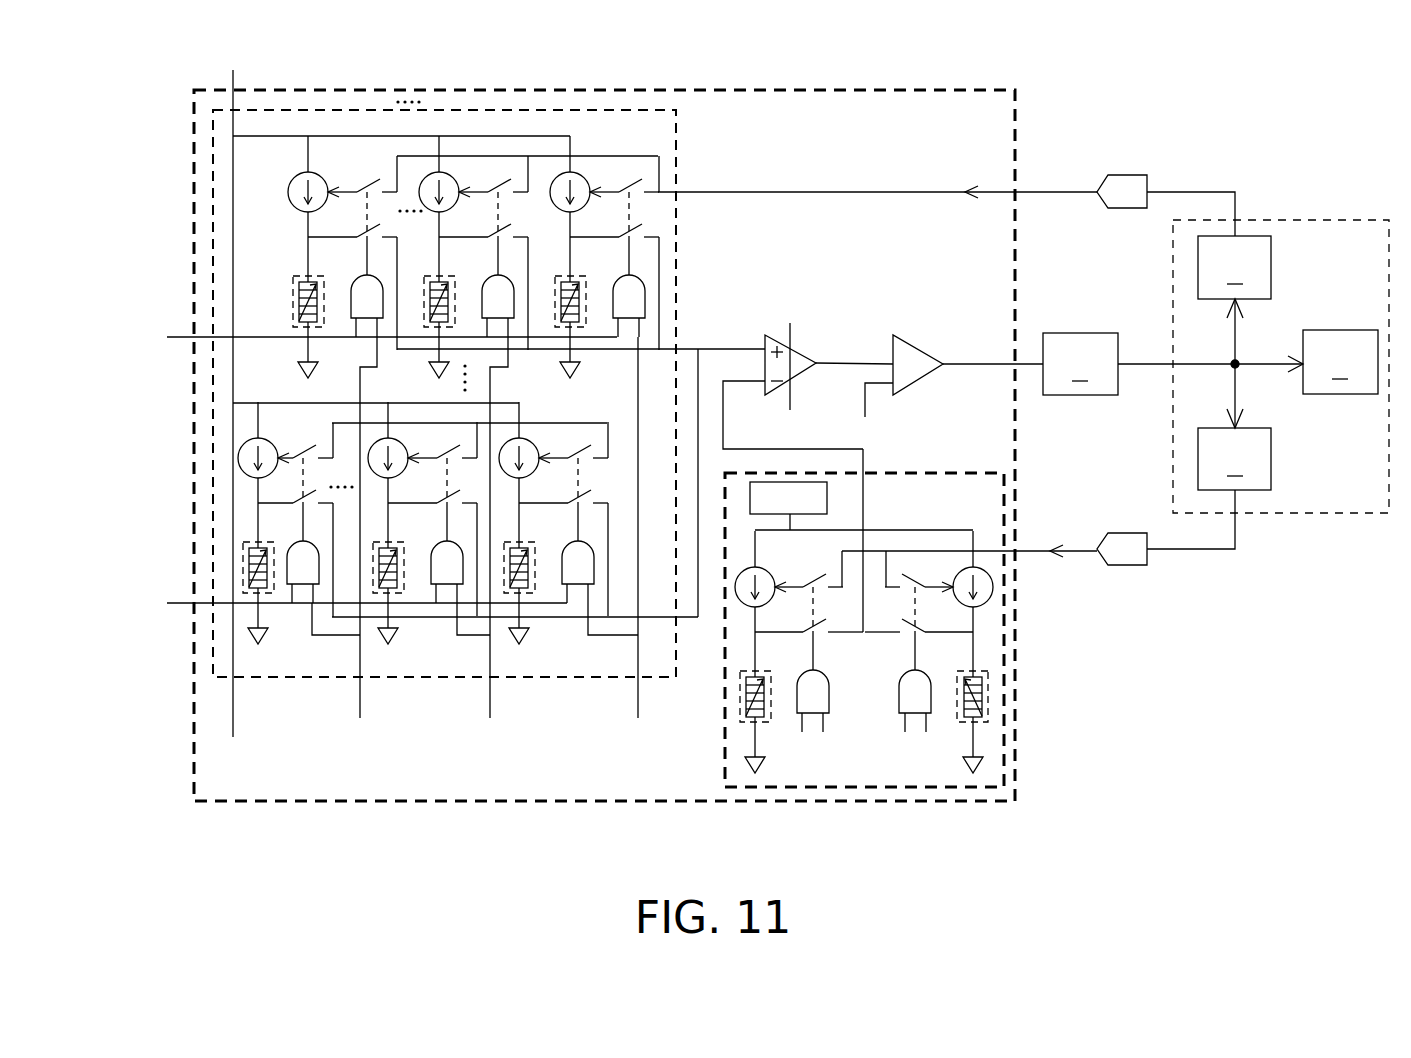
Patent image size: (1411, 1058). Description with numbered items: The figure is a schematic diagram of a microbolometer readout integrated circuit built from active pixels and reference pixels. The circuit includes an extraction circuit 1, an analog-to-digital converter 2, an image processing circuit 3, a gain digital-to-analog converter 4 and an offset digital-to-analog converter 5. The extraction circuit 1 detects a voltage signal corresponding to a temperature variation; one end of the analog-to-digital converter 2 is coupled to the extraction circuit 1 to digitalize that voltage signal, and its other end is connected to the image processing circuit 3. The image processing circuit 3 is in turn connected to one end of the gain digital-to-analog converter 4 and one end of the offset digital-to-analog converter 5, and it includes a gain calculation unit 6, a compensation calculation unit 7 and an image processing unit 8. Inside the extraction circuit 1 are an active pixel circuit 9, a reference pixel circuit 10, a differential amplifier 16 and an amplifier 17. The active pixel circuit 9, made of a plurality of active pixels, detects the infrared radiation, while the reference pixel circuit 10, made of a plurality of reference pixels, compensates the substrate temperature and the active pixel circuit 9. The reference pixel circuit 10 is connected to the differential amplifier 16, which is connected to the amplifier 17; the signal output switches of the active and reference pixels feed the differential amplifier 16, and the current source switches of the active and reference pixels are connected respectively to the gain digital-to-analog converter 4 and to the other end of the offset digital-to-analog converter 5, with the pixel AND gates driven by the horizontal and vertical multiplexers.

The extraction circuit 1 is at (443, 90).
The analog-to-digital converter 2 is at (1173, 364).
The image processing circuit 3 is at (1371, 220).
The gain digital-to-analog converter 4 is at (1128, 533).
The offset digital-to-analog converter 5 is at (1128, 175).
The gain calculation unit 6 is at (1209, 278).
The compensation calculation unit 7 is at (1209, 456).
The image processing unit 8 is at (1340, 362).
The active pixel circuit 9 is at (445, 677).
The reference pixel circuit 10 is at (1004, 746).
The differential amplifier 16 is at (803, 352).
The amplifier 17 is at (920, 345).